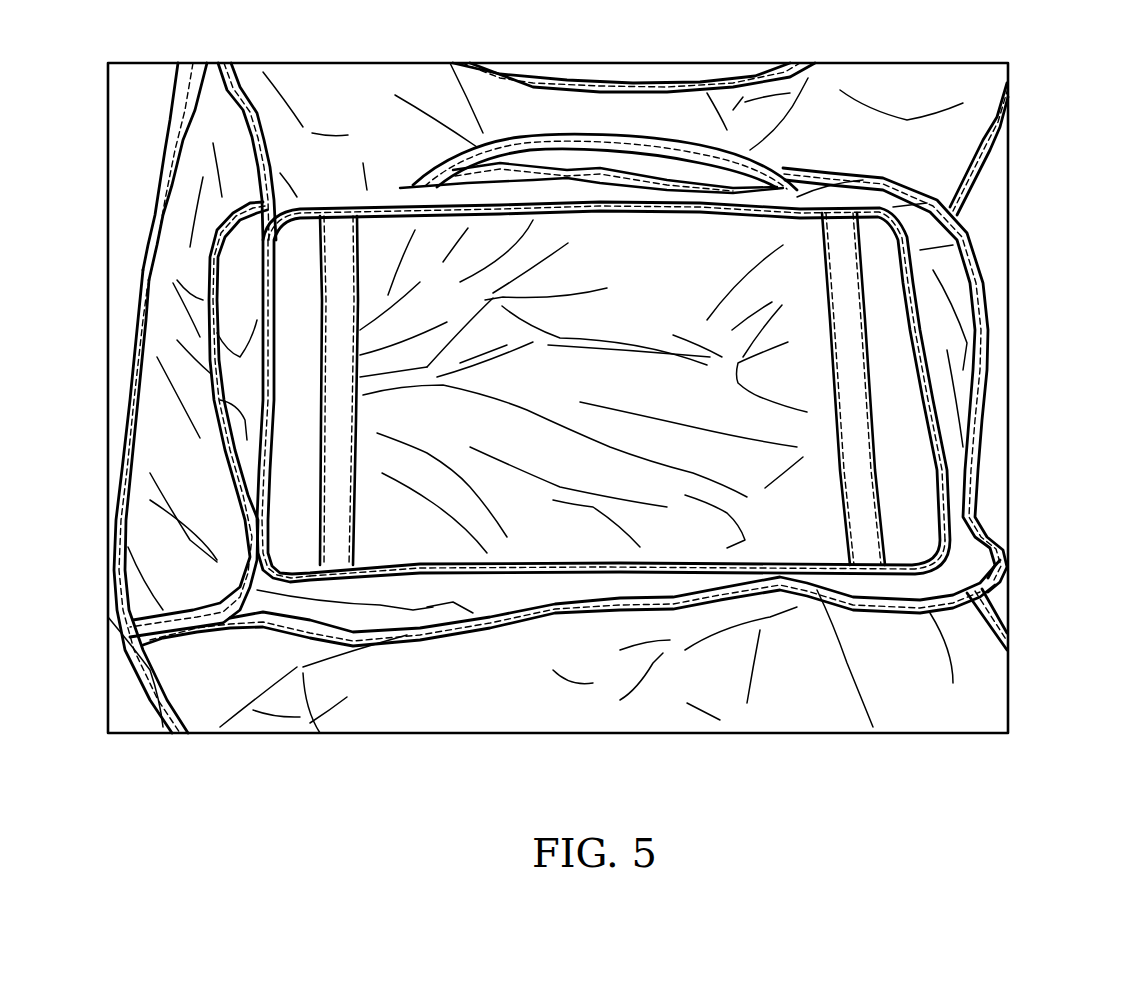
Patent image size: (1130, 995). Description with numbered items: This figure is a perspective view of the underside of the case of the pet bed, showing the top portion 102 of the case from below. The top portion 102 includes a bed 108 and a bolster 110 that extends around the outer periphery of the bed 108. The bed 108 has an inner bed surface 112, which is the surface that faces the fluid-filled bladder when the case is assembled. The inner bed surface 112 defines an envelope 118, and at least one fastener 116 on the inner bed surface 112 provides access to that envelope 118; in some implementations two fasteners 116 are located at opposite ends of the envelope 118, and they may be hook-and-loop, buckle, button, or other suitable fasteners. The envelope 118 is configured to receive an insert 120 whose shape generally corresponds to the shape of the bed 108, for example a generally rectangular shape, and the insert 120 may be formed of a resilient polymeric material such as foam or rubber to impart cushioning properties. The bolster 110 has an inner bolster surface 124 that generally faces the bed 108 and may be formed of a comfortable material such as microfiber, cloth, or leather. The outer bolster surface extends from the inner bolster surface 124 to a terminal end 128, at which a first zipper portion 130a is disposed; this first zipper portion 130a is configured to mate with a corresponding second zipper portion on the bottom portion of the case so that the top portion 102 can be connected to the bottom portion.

The top portion 102 is at (1039, 71).
The bed 108 is at (703, 598).
The bolster 110 is at (161, 526).
The inner bed surface 112 is at (608, 535).
The fastener 116 is at (330, 537).
The envelope 118 is at (417, 537).
The insert 120 is at (780, 537).
The inner bolster surface 124 is at (145, 397).
The terminal end 128 is at (146, 288).
The first zipper portion 130a is at (168, 144).